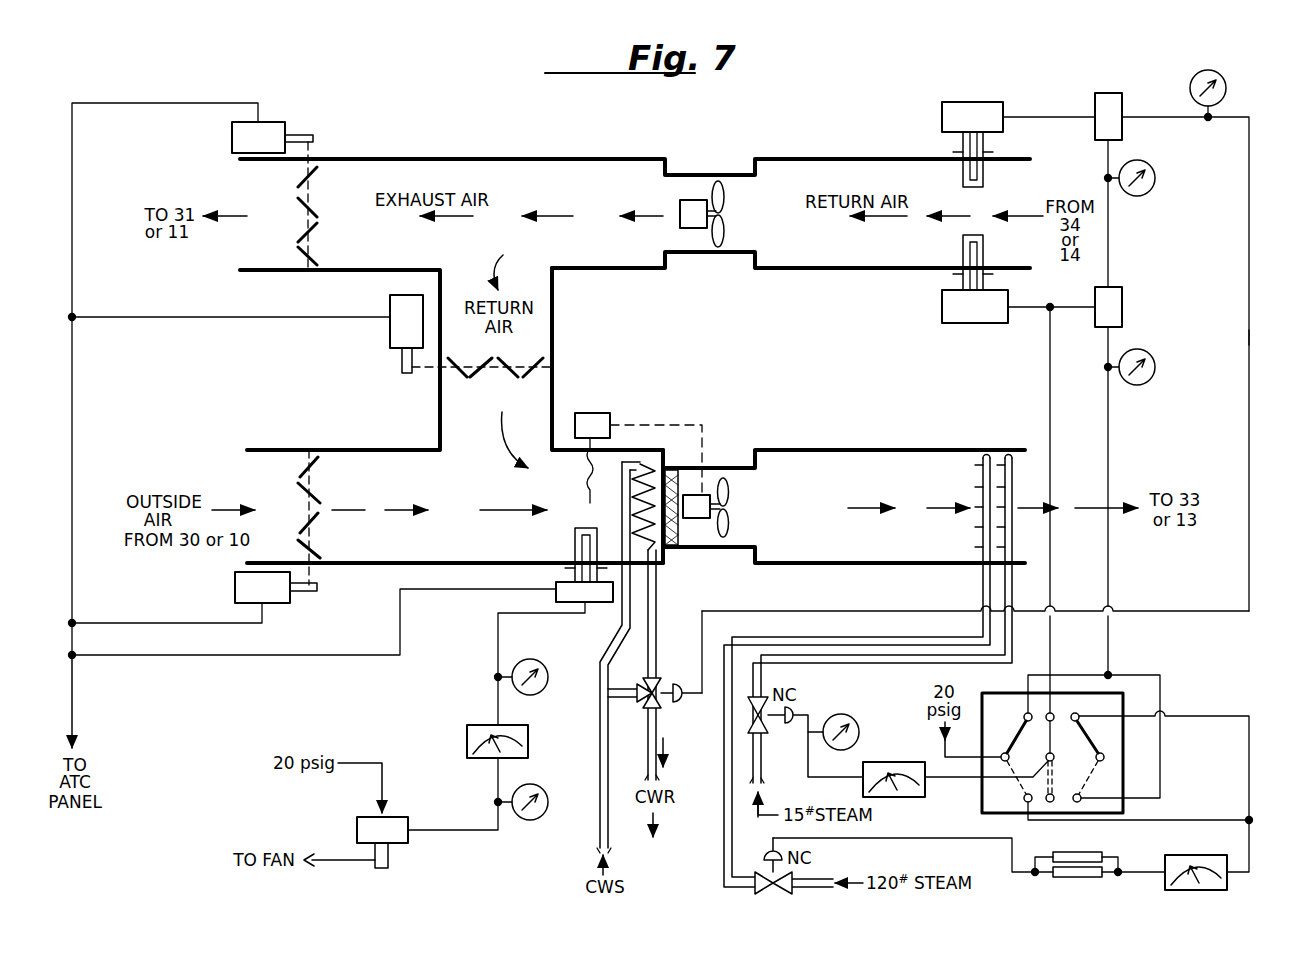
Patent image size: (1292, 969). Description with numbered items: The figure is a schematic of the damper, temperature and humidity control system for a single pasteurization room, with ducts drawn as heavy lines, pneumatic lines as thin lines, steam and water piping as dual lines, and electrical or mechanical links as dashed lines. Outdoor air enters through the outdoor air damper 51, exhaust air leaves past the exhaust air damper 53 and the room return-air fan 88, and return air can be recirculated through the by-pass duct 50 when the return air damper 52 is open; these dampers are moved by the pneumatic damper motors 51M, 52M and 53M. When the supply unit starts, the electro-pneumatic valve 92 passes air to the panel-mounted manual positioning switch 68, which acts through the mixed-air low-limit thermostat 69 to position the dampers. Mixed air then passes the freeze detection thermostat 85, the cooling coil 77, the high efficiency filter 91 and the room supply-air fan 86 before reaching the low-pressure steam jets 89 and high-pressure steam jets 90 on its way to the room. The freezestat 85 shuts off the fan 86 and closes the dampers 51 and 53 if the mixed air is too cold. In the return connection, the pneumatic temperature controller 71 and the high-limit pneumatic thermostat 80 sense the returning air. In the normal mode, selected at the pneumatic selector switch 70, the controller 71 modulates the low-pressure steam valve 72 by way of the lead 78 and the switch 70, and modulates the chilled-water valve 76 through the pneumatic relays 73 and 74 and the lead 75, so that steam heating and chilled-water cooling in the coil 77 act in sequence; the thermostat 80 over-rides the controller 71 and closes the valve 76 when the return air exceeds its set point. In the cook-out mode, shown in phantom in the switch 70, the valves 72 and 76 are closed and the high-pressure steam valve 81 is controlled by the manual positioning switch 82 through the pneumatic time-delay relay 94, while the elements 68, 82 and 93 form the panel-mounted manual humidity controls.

The pneumatic damper motor 53M is at (272, 128).
The exhaust air damper 53 is at (313, 232).
The pneumatic damper motor 52M is at (400, 334).
The return air damper 52 is at (512, 361).
The pneumatic damper motor 51M is at (277, 596).
The outdoor air damper 51 is at (313, 491).
The return air by-pass duct 50 is at (543, 292).
The room return-air fan 88 is at (721, 190).
The high-limit pneumatic thermostat 80 is at (950, 113).
The pneumatic temperature controller 71 is at (948, 307).
The pneumatic relay 74 is at (1103, 100).
The pneumatic relay 73 is at (1112, 298).
The lead 78 is at (1050, 368).
The lead 75 is at (1251, 340).
The freeze detection thermostat 85 is at (597, 420).
The high efficiency filter 91 is at (672, 466).
The room supply-air fan 86 is at (722, 480).
The cooling coil 77 is at (653, 534).
The mixed air low limit thermostat 69 is at (603, 594).
The chilled-water valve 76 is at (658, 683).
The high-pressure steam jets 90 is at (983, 476).
The low-pressure steam jets 89 is at (1014, 476).
The low-pressure steam valve 72 is at (800, 704).
The manual humidity control 93 is at (878, 765).
The pneumatic selector switch 70 is at (995, 794).
The pneumatic time-delay relay 94 is at (1085, 856).
The manual positioning switch 82 is at (1170, 862).
The high-pressure steam valve 81 is at (755, 888).
The manual positioning switch 68 is at (470, 730).
The electro-pneumatic valve 92 is at (395, 826).